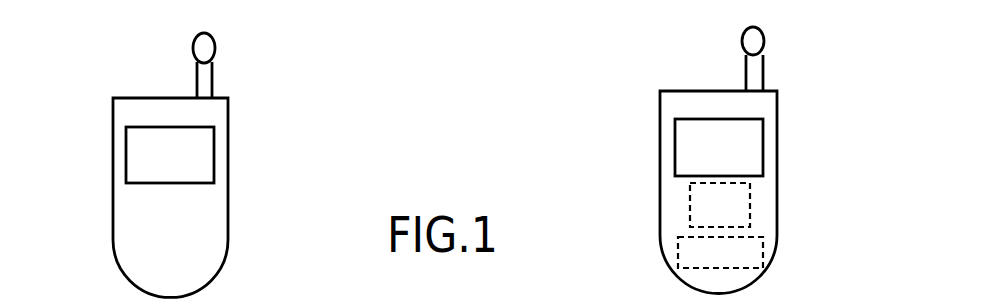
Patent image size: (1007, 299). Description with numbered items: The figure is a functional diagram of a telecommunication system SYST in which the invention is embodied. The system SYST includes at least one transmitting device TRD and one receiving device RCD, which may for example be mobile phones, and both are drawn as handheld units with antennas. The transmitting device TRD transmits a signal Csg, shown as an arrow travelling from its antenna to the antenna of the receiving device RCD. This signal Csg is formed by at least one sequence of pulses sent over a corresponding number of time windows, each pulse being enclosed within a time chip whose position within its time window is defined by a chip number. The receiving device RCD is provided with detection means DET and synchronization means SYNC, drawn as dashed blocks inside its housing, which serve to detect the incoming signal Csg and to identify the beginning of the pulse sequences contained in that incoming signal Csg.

The telecommunication system SYST is at (146, 51).
The transmitting device TRD is at (113, 143).
The signal Csg is at (708, 40).
The receiving device RCD is at (764, 160).
The detection means DET is at (720, 205).
The synchronization means SYNC is at (720, 254).